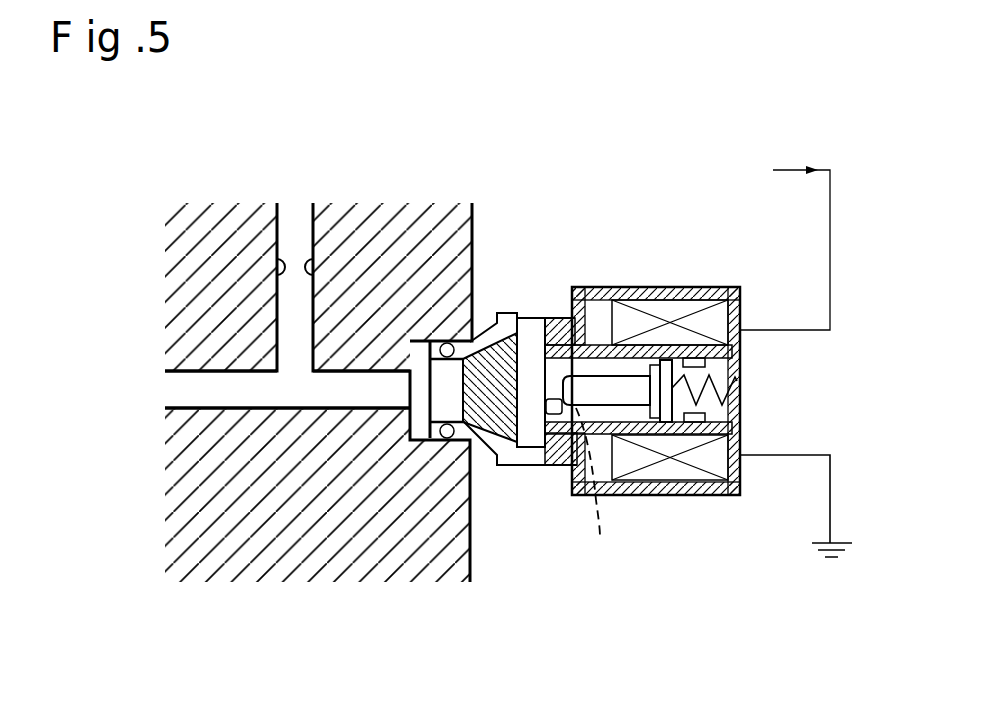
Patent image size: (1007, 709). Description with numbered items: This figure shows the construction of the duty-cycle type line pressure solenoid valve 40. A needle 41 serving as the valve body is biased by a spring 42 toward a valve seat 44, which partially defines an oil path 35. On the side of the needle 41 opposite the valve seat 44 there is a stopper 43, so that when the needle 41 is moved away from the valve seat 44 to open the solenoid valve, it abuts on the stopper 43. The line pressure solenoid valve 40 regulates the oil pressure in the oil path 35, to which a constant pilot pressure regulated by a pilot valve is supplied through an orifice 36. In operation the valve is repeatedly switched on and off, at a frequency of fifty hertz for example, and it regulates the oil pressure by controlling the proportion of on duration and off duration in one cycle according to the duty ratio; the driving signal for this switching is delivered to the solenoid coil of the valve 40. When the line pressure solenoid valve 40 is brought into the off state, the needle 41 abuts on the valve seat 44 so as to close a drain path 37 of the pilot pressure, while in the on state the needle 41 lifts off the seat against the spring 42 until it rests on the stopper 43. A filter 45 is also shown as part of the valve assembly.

The oil path 35 is at (235, 393).
The orifice 36 is at (289, 262).
The drain path 37 is at (600, 535).
The line pressure solenoid valve 40 is at (710, 496).
The needle 41 is at (583, 383).
The spring 42 is at (710, 410).
The stopper 43 is at (712, 426).
The valve seat 44 is at (524, 322).
The filter 45 is at (484, 445).